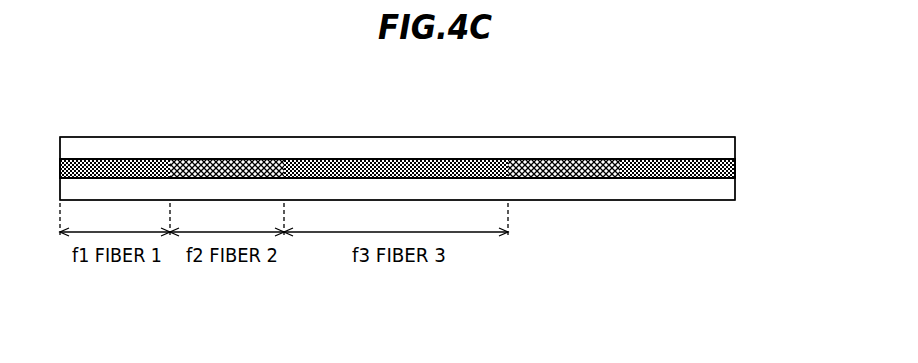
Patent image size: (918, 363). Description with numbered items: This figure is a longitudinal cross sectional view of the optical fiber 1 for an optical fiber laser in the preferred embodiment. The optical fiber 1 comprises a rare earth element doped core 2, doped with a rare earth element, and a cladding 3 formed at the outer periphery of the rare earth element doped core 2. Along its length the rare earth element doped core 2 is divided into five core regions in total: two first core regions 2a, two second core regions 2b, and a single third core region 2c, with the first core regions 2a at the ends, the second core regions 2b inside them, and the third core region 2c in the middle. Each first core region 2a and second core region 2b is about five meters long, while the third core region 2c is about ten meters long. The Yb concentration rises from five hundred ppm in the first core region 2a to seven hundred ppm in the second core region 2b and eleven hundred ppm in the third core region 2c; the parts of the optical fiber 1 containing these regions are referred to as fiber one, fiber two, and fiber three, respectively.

The optical fiber for an optical fiber laser 1 is at (690, 210).
The rare earth element doped core 2 is at (444, 111).
The first core region 2a is at (90, 160).
The second core region 2b is at (203, 160).
The third core region 2c is at (439, 111).
The cladding 3 is at (740, 199).